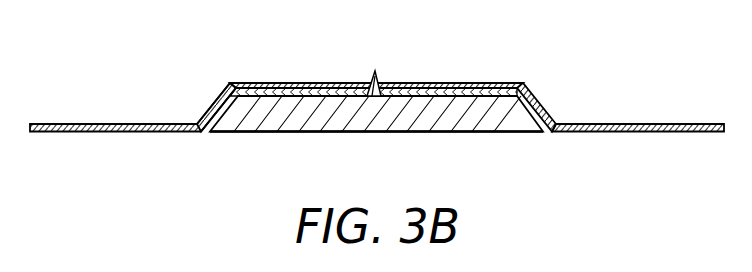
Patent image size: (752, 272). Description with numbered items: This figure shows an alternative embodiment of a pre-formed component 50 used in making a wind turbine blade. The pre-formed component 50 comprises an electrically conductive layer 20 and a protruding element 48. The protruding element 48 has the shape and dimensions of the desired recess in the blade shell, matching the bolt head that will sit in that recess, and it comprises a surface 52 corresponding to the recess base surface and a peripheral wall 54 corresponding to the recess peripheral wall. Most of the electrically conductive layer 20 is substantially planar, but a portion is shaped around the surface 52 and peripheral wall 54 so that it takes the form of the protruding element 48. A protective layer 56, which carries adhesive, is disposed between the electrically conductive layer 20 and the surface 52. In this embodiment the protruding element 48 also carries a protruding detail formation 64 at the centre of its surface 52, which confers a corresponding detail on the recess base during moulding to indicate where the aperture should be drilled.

The electrically conductive layer 20 is at (667, 123).
The protruding element 48 is at (377, 120).
The pre-formed component 50 is at (293, 72).
The surface 52 is at (295, 92).
The peripheral wall 54 is at (210, 108).
The protective layer 56 is at (480, 92).
The protruding detail formation 64 is at (382, 90).